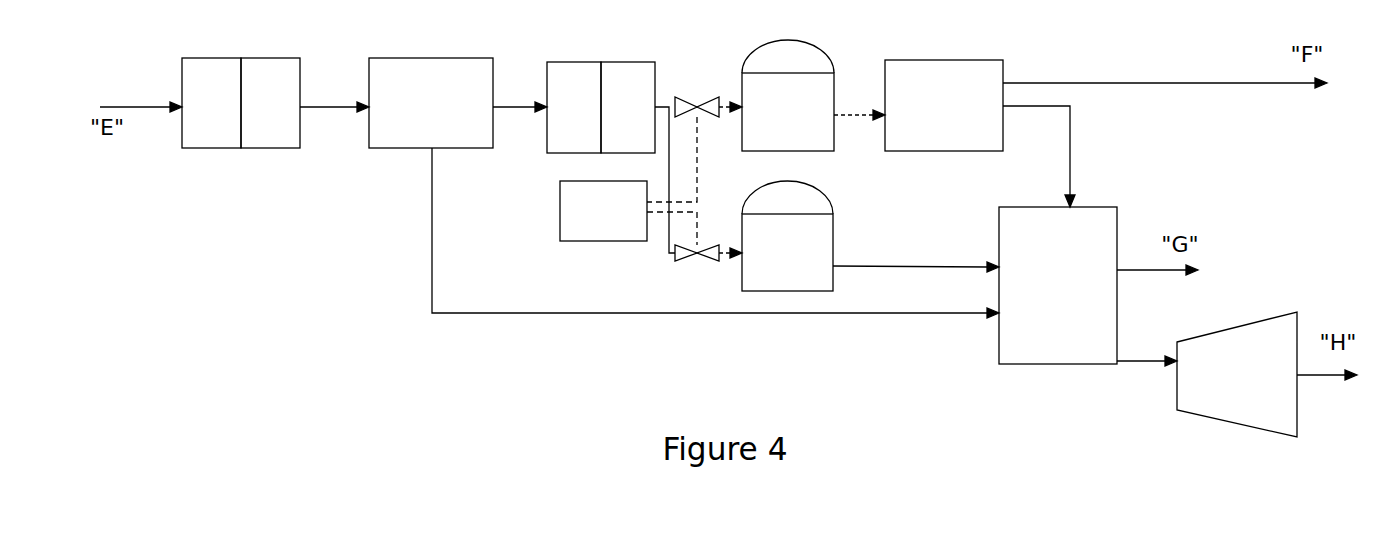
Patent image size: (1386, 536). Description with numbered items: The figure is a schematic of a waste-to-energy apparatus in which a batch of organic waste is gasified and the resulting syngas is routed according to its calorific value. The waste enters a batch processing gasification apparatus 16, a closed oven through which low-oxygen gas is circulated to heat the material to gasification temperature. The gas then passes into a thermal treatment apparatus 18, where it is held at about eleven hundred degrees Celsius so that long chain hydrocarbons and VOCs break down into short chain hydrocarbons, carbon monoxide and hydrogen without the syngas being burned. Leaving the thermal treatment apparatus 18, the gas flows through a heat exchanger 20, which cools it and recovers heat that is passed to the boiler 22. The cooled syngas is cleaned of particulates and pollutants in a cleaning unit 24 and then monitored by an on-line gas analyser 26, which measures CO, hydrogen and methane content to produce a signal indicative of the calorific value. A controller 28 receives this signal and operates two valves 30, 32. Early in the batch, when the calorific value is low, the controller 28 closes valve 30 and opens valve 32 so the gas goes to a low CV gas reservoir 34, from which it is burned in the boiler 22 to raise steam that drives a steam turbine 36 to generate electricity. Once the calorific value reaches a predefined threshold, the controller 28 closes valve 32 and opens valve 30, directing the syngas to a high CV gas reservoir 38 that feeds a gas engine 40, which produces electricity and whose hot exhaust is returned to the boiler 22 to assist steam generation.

The batch processing gasification apparatus 16 is at (211, 103).
The thermal treatment apparatus 18 is at (270, 103).
The heat exchanger 20 is at (431, 103).
The boiler 22 is at (1058, 285).
The cleaning unit 24 is at (574, 107).
The on-line gas analyser 26 is at (628, 107).
The controller 28 is at (603, 211).
The valve 30 is at (697, 94).
The valve 32 is at (697, 267).
The low CV gas reservoir 34 is at (787, 236).
The steam turbine 36 is at (1237, 374).
The high CV gas reservoir 38 is at (788, 95).
The gas engine 40 is at (944, 105).